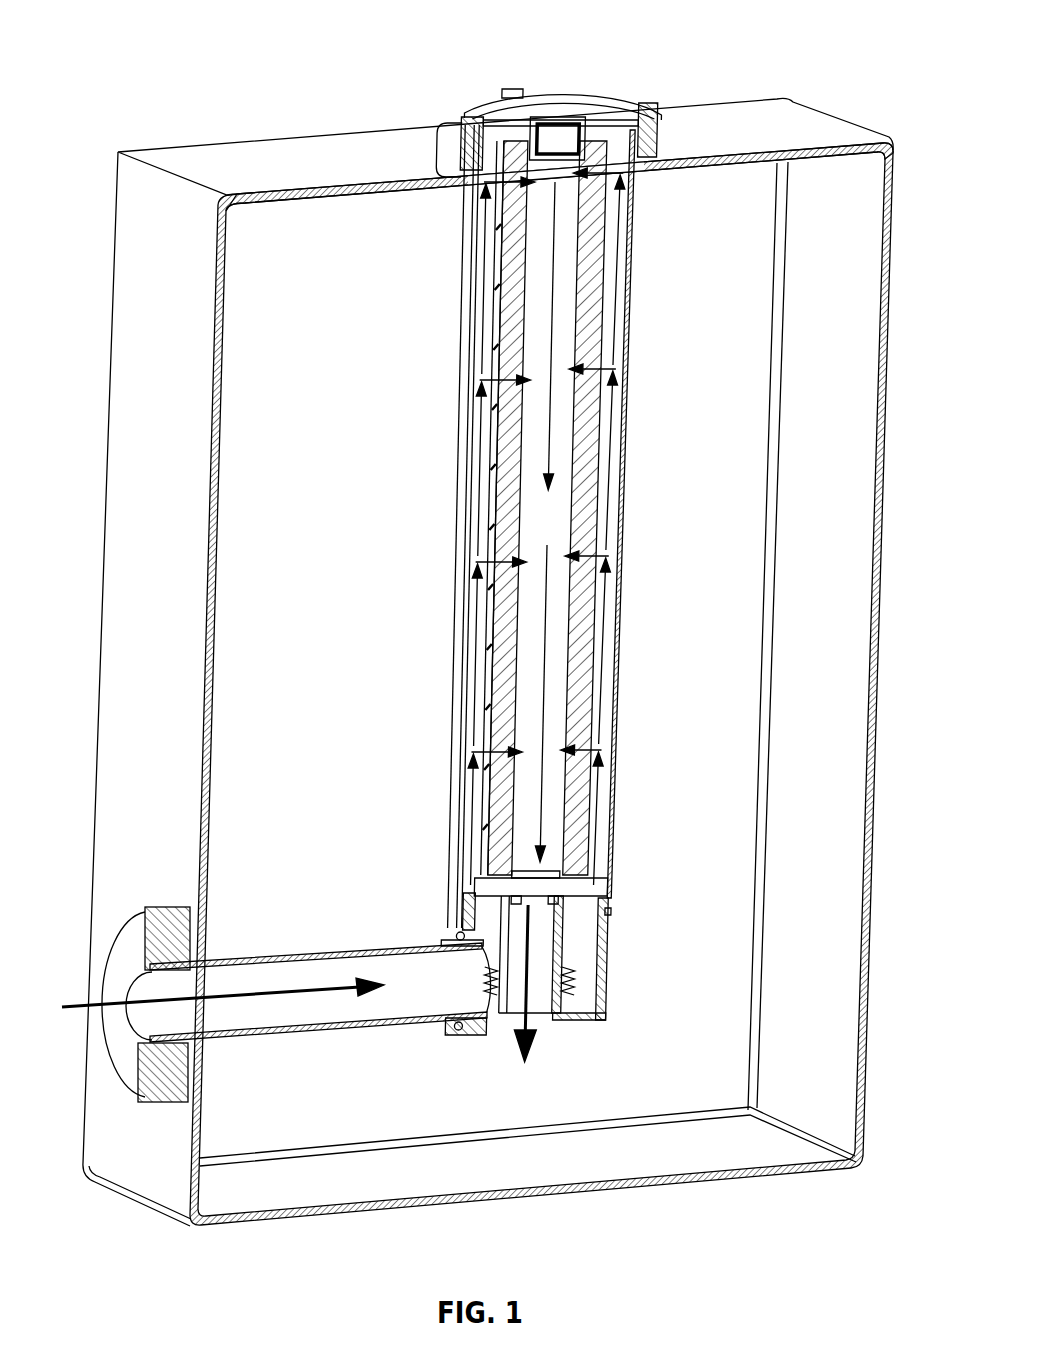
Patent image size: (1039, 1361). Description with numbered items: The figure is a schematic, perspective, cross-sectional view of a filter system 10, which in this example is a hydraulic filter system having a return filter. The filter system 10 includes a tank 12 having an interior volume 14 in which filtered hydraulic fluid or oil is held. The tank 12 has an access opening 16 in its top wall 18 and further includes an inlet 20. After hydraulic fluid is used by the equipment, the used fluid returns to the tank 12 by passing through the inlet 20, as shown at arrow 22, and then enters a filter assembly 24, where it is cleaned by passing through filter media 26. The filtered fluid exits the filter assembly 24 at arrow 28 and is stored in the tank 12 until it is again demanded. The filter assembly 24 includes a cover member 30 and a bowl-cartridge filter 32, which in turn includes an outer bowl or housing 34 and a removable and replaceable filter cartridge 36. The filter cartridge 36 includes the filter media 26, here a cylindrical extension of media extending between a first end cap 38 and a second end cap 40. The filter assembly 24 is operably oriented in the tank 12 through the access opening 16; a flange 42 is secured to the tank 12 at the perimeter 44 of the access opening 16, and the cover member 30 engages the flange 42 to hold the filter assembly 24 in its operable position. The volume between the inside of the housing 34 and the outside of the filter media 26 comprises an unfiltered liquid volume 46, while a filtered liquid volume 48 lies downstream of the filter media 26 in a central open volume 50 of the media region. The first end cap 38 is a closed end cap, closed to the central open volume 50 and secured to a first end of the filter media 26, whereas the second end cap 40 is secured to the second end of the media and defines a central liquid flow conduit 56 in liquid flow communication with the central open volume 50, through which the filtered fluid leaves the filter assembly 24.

The filter system 10 is at (106, 32).
The tank 12 is at (95, 745).
The interior volume 14 is at (830, 568).
The access opening 16 is at (692, 160).
The top wall 18 is at (212, 160).
The inlet 20 is at (137, 1013).
The arrow 22 is at (203, 990).
The filter assembly 24 is at (414, 170).
The filter media 26 is at (590, 436).
The arrow 28 is at (530, 1018).
The cover member 30 is at (476, 112).
The bowl-cartridge filter 32 is at (722, 310).
The housing 34 is at (612, 808).
The filter cartridge 36 is at (616, 222).
The first end cap 38 is at (537, 105).
The second end cap 40 is at (613, 905).
The flange 42 is at (430, 143).
The perimeter 44 is at (652, 142).
The unfiltered liquid volume 46 is at (612, 545).
The filtered liquid volume 48 is at (520, 768).
The central open volume 50 is at (532, 648).
The central liquid flow conduit 56 is at (532, 898).